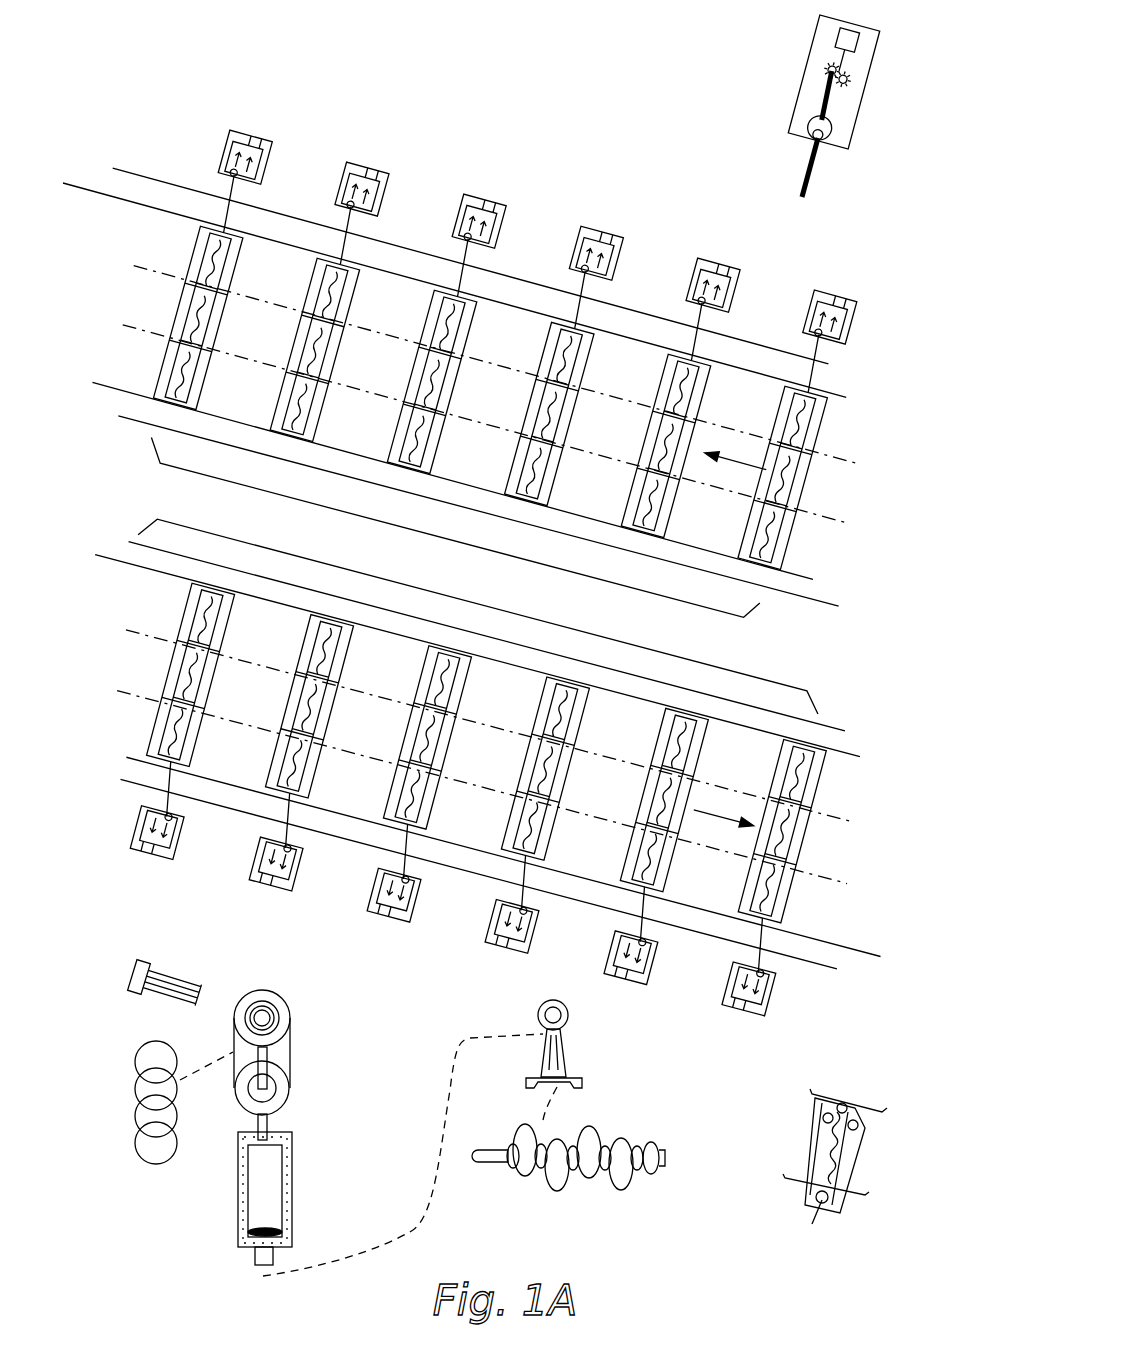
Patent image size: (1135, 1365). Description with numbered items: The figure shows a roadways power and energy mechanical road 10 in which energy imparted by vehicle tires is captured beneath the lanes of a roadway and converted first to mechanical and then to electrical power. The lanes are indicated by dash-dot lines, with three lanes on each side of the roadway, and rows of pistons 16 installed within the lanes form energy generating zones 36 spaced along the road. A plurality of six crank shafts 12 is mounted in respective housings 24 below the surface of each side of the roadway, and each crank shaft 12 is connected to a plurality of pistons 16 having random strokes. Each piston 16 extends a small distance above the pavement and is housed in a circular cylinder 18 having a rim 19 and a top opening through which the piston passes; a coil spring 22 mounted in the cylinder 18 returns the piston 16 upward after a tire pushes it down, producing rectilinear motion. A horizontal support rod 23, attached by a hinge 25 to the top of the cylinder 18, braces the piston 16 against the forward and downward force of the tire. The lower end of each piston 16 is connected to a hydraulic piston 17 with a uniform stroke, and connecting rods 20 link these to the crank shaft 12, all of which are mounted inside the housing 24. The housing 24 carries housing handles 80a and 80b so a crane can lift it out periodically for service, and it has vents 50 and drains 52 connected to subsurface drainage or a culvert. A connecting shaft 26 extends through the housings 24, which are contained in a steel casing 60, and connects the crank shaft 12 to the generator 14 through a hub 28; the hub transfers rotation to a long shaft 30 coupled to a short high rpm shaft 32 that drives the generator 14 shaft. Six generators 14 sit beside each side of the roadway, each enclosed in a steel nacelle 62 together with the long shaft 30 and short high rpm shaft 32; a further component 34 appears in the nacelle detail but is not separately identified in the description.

The roadways power and energy mechanical road 10 is at (634, 180).
The crank shaft 12 is at (688, 379).
The generator 14 is at (531, 500).
The piston 16 is at (268, 639).
The hydraulic piston 17 is at (292, 1186).
The circular cylinder 18 is at (290, 1058).
The rim 19 is at (290, 1017).
The connecting rod 20 is at (580, 1083).
The coil spring 22 is at (141, 1153).
The horizontal support rod 23 is at (188, 980).
The housing 24 is at (839, 805).
The hinge 25 is at (126, 985).
The connecting shaft 26 is at (455, 288).
The hub 28 is at (819, 127).
The long shaft 30 is at (827, 95).
The short high rpm shaft 32 is at (838, 74).
The motor 34 is at (844, 51).
The energy generating zone 36 is at (483, 609).
The vent 50 is at (828, 1112).
The drain 52 is at (843, 1104).
The steel casing 60 is at (803, 489).
The steel nacelle 62 is at (856, 326).
The housing handle 80a is at (880, 1110).
The housing handle 80b is at (790, 1178).